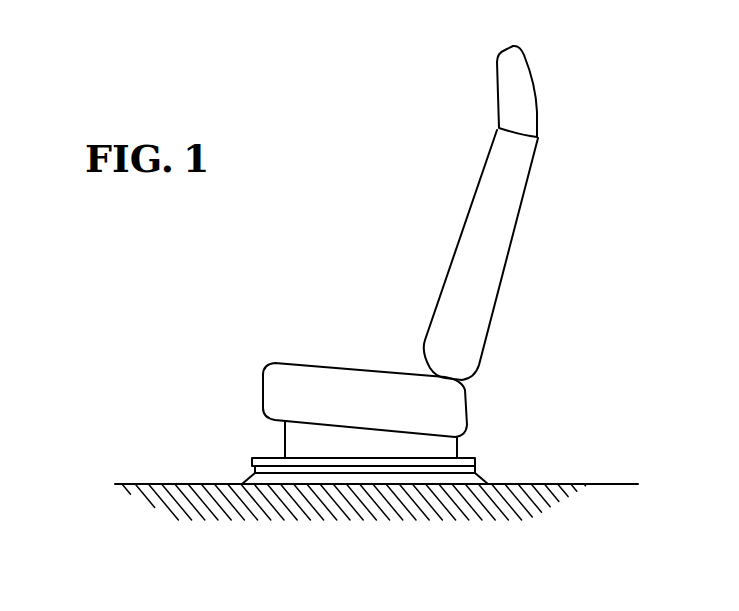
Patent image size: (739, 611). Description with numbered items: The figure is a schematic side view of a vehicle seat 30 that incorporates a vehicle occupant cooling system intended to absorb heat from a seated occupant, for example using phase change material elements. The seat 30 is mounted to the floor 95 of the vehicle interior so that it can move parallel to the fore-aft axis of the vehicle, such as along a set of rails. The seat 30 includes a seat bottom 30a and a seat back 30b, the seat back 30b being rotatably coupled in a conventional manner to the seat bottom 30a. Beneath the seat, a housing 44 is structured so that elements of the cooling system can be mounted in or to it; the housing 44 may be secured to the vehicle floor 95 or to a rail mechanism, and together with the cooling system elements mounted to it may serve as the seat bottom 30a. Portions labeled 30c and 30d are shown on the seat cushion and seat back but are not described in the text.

The vehicle seat 30 is at (454, 127).
The seat bottom 30a is at (259, 416).
The seat back 30b is at (521, 239).
The seat cushion 30c is at (303, 362).
The seat back cushion 30d is at (473, 225).
The housing 44 is at (390, 443).
The floor 95 is at (152, 484).